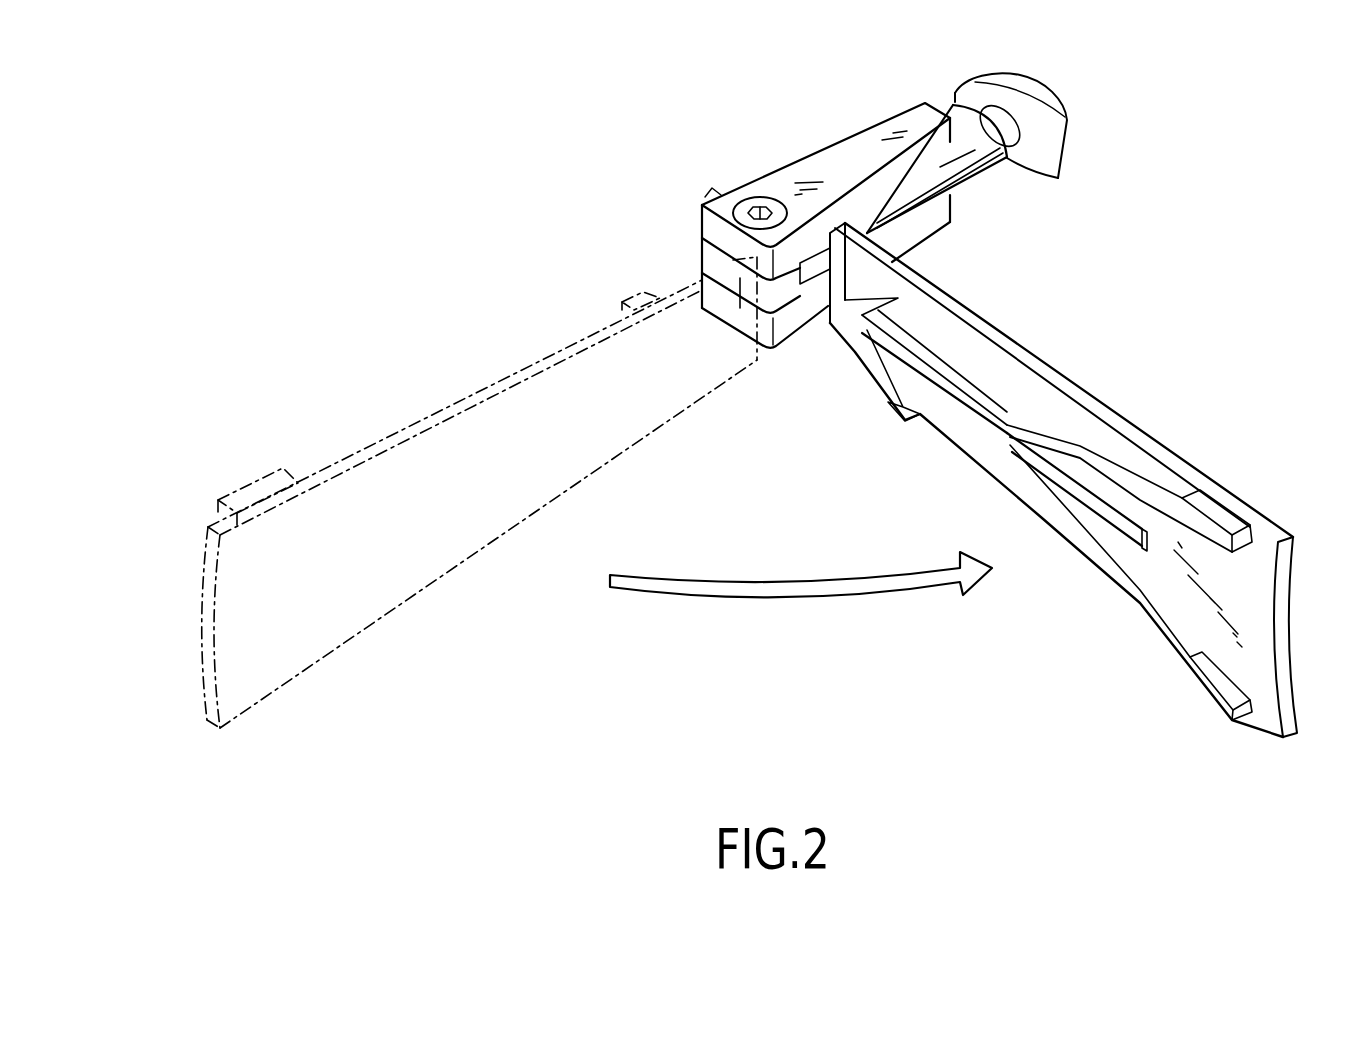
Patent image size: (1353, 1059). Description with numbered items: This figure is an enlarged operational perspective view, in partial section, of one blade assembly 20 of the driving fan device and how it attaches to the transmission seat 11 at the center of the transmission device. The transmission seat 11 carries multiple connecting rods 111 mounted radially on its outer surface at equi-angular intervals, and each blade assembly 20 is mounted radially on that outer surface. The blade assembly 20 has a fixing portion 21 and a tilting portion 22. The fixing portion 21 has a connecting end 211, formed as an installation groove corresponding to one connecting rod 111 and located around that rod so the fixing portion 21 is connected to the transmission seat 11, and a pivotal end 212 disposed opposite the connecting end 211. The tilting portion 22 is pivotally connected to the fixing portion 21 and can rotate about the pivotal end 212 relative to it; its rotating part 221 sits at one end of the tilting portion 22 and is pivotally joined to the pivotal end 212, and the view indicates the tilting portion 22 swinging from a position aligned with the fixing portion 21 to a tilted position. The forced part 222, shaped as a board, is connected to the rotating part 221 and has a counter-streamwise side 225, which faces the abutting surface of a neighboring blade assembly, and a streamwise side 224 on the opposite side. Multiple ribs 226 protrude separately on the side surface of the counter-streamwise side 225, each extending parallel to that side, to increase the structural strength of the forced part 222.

The transmission seat 11 is at (1038, 151).
The connecting rod 111 is at (1003, 118).
The blade assembly 20 is at (1105, 246).
The fixing portion 21 is at (827, 133).
The connecting end 211 is at (970, 128).
The pivotal end 212 is at (762, 203).
The rotating part 221 is at (735, 293).
The tilting portion 22 is at (1258, 468).
The forced part 222 is at (1141, 420).
The streamwise side 224 is at (1072, 378).
The counter-streamwise side 225 is at (992, 452).
The rib 226 is at (1155, 613).